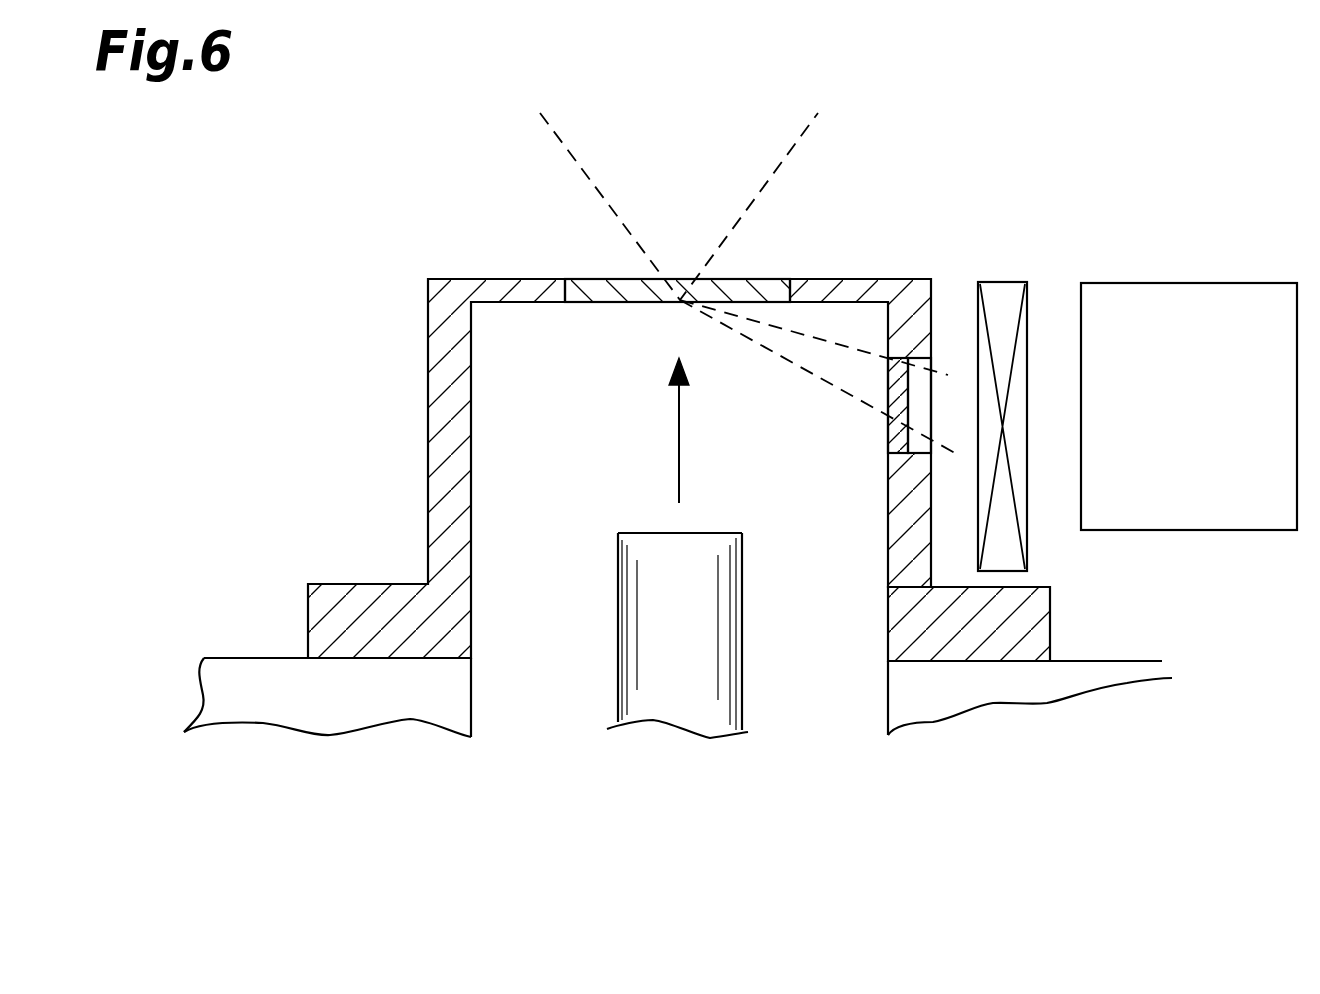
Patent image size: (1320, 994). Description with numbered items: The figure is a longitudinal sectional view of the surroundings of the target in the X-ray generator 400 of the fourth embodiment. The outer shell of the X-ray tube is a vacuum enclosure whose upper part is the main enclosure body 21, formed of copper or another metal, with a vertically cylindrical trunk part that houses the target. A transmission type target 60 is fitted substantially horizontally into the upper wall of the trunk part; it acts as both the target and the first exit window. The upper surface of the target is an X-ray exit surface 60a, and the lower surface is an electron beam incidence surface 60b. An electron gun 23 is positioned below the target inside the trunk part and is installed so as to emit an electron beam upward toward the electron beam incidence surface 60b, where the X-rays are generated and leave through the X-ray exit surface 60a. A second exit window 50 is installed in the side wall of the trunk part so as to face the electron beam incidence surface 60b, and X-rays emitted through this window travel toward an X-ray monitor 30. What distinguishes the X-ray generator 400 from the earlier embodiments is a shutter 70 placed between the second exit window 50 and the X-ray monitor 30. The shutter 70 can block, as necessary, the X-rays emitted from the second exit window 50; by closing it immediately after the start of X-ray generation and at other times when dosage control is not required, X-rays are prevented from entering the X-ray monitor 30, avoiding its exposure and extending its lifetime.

The main enclosure body 21 is at (428, 490).
The electron gun 23 is at (707, 670).
The X-ray monitor 30 is at (1195, 300).
The second exit window 50 is at (912, 372).
The transmission type target 60 is at (755, 279).
The X-ray exit surface 60a is at (607, 279).
The electron beam incidence surface 60b is at (620, 303).
The shutter 70 is at (1003, 282).
The X-ray generator 400 is at (1116, 806).